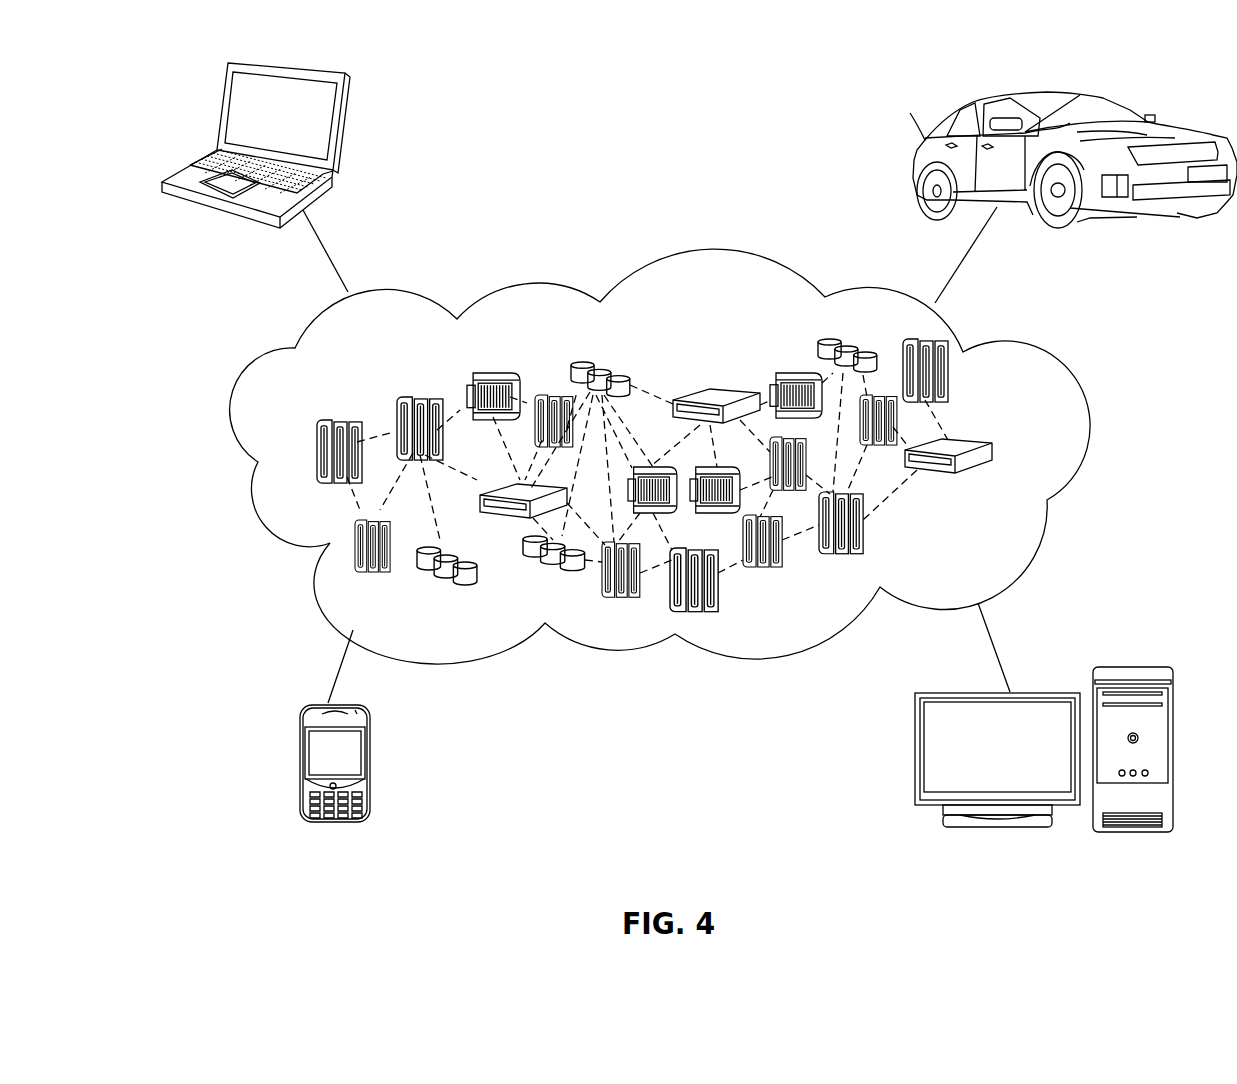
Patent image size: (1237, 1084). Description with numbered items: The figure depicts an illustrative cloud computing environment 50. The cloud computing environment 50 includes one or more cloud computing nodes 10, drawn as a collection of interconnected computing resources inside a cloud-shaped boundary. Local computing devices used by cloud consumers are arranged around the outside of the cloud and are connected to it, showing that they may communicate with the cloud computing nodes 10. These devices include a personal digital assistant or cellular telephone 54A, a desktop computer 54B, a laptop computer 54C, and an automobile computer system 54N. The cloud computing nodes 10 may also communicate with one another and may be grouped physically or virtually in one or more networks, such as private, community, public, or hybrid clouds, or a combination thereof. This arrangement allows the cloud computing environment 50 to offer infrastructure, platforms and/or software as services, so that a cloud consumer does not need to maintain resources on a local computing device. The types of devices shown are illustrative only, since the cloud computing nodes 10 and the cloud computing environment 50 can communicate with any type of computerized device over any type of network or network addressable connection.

The cloud computing environment 50 is at (1053, 365).
The cloud computing nodes 10 is at (1030, 452).
The personal digital assistant (PDA) or cellular telephone 54A is at (300, 767).
The desktop computer 54B is at (1137, 668).
The laptop computer 54C is at (340, 132).
The automobile computer system 54N is at (925, 140).